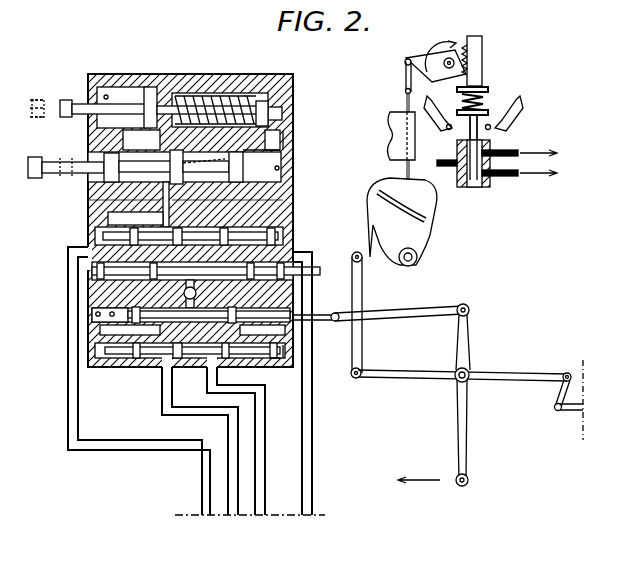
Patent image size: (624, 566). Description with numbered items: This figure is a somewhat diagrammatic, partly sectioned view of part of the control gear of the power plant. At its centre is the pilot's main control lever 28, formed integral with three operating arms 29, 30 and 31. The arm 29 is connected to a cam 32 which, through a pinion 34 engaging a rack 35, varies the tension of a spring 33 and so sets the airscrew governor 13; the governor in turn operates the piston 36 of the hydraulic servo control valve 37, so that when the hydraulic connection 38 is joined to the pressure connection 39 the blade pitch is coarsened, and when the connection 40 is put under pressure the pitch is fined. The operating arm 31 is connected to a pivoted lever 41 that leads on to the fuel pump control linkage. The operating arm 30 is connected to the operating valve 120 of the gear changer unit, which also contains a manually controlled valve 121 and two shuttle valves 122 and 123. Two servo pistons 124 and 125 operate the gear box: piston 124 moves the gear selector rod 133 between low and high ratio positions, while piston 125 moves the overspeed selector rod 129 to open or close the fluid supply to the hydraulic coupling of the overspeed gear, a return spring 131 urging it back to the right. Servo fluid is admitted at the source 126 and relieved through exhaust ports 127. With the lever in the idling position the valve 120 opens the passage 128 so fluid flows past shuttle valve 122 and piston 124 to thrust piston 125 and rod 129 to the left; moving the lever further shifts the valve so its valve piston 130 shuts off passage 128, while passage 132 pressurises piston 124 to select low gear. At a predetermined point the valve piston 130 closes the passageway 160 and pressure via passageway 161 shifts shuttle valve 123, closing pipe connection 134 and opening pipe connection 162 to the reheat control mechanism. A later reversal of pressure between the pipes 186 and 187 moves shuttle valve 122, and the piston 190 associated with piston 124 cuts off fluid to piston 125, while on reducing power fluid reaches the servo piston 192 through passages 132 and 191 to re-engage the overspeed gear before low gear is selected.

The airscrew governor 13 is at (512, 112).
The main control lever 28 is at (470, 433).
The operating arm 29 is at (391, 378).
The operating arm 30 is at (470, 340).
The operating arm 31 is at (518, 375).
The cam 32 is at (417, 228).
The spring 33 is at (484, 99).
The pinion 34 is at (445, 58).
The rack 35 is at (484, 56).
The piston 36 is at (482, 135).
The hydraulic servo control valve 37 is at (478, 188).
The hydraulic connection 38 is at (519, 162).
The pressure connection 39 is at (452, 167).
The connection 40 is at (520, 178).
The lever 41 is at (566, 413).
The operating valve 120 is at (308, 320).
The manually controlled valve 121 is at (292, 272).
The shuttle valve 122 is at (286, 240).
The shuttle valve 123 is at (278, 362).
The servo piston 124 is at (278, 151).
The servo piston 125 is at (150, 92).
The source of hydraulic fluid 126 is at (92, 312).
The exhaust port 127 is at (108, 95).
The passage 128 is at (183, 293).
The gear selector rod 129 is at (88, 106).
The valve piston 130 is at (97, 340).
The return spring 131 is at (192, 94).
The passage 132 is at (284, 210).
The gear selector rod 133 is at (56, 170).
The pipe connection 134 is at (262, 444).
The passageway 160 is at (102, 368).
The passageway 161 is at (291, 346).
The pipe connection 162 is at (230, 490).
The pipe 186 is at (204, 469).
The pipe 187 is at (304, 471).
The piston 190 is at (102, 157).
The passageway 191 is at (285, 141).
The servo piston 192 is at (263, 106).